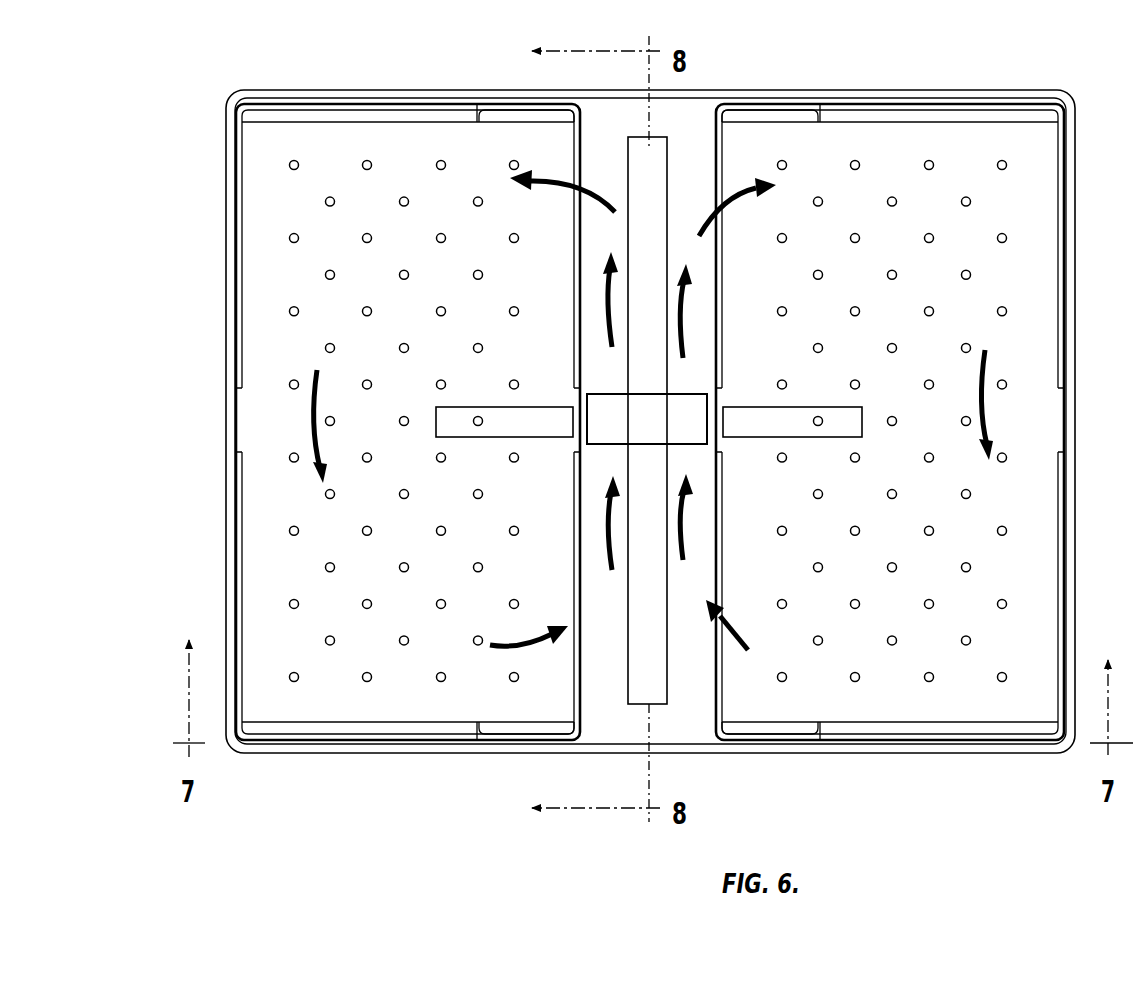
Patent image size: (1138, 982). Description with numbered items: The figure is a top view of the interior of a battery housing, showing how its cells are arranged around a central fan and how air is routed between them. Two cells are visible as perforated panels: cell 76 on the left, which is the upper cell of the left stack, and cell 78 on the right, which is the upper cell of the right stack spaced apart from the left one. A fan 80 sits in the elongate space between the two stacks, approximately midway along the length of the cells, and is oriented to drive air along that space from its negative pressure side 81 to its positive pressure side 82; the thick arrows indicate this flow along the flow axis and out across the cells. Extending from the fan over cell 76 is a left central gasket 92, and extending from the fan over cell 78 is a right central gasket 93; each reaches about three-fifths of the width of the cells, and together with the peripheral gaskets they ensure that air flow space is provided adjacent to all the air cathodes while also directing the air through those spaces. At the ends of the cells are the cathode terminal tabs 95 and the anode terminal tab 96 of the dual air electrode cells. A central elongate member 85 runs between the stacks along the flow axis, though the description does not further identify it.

The cell 76 is at (260, 307).
The cell 78 is at (1015, 203).
The fan 80 is at (597, 394).
The negative pressure side 81 is at (693, 456).
The positive pressure side 82 is at (691, 384).
The central air duct 85 is at (627, 640).
The left central gasket 92 is at (483, 428).
The right central gasket 93 is at (813, 420).
The cathode terminal tab 95 is at (760, 120).
The anode terminal tab 96 is at (527, 118).